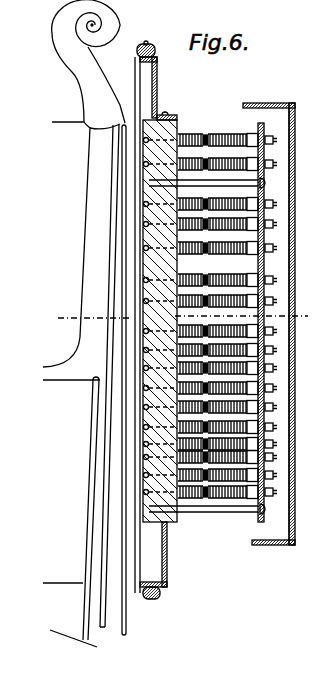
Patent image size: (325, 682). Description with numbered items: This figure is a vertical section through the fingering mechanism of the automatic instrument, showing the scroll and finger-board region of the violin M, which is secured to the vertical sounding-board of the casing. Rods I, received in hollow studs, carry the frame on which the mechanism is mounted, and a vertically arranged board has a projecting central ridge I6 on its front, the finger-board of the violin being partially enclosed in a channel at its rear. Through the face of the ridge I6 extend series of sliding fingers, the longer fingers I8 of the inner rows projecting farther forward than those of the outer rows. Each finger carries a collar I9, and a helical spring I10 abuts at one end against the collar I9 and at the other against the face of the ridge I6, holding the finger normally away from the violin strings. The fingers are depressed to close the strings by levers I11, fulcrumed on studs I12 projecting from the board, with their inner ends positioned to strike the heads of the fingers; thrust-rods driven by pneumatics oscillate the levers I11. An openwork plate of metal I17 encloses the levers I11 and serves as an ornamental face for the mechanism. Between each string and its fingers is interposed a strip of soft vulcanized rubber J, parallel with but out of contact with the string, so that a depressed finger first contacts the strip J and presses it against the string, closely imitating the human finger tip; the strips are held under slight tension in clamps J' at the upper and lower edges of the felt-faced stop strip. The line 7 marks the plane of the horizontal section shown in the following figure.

The rods I is at (296, 481).
The projecting central ridge I6 is at (176, 119).
The sliding pins or fingers of the inner rows I8 is at (208, 133).
The collars I9 is at (249, 134).
The helical springs I10 is at (227, 133).
The levers I11 is at (259, 133).
The studs I12 is at (274, 227).
The openwork plate of metal I17 is at (291, 103).
The strip of soft vulcanized rubber J is at (145, 325).
The clamps J' is at (156, 322).
The violin M is at (90, 382).
The section line 7 is at (183, 317).